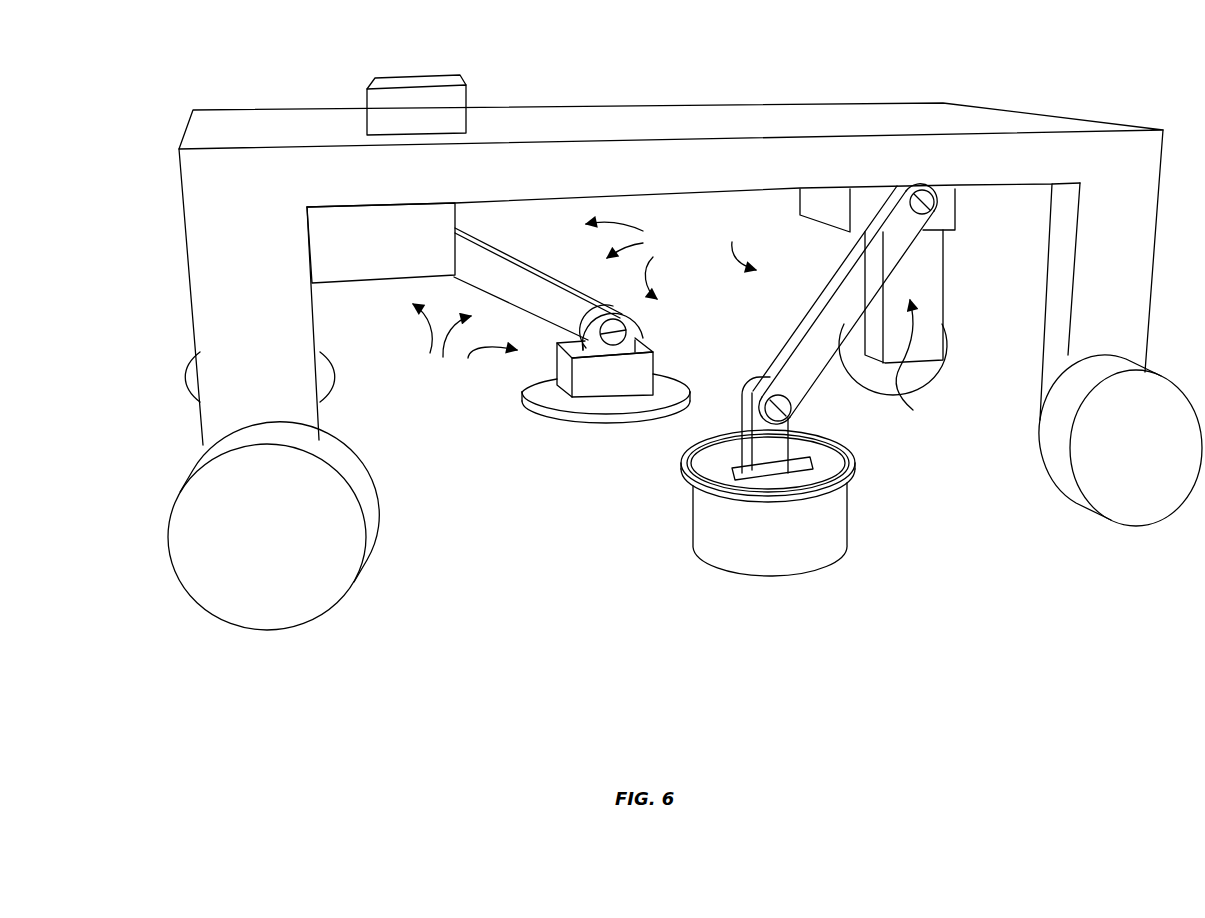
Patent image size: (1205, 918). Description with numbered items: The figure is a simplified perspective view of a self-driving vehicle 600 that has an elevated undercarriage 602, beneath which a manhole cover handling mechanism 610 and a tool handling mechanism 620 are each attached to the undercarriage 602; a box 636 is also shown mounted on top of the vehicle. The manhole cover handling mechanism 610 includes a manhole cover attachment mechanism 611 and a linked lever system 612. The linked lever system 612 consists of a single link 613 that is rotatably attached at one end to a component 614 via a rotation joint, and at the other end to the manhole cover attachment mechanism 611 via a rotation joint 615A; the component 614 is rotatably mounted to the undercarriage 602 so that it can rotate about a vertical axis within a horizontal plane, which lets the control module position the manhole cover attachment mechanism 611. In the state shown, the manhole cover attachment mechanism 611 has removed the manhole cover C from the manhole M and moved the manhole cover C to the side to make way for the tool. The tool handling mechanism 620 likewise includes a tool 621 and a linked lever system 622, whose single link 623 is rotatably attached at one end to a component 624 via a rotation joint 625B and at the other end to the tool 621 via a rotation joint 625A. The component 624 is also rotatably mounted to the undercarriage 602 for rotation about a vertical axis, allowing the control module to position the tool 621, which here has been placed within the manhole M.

The self-driving vehicle 600 is at (725, 33).
The elevated undercarriage 602 is at (813, 158).
The controller 636 is at (434, 121).
The component 614 is at (404, 240).
The single link 613 is at (523, 270).
The rotation joint 615A is at (623, 324).
The manhole cover attachment mechanism 611 is at (631, 385).
The manhole cover C is at (685, 385).
The manhole cover handling mechanism 610 is at (637, 260).
The linked lever system 612 is at (465, 345).
The tool handling mechanism 620 is at (736, 244).
The component 624 is at (822, 205).
The single link 623 is at (831, 314).
The rotation joint 625B is at (935, 203).
The rotation joint 625A is at (791, 406).
The linked lever system 622 is at (882, 415).
The tool 621 is at (849, 461).
The manhole M is at (849, 518).